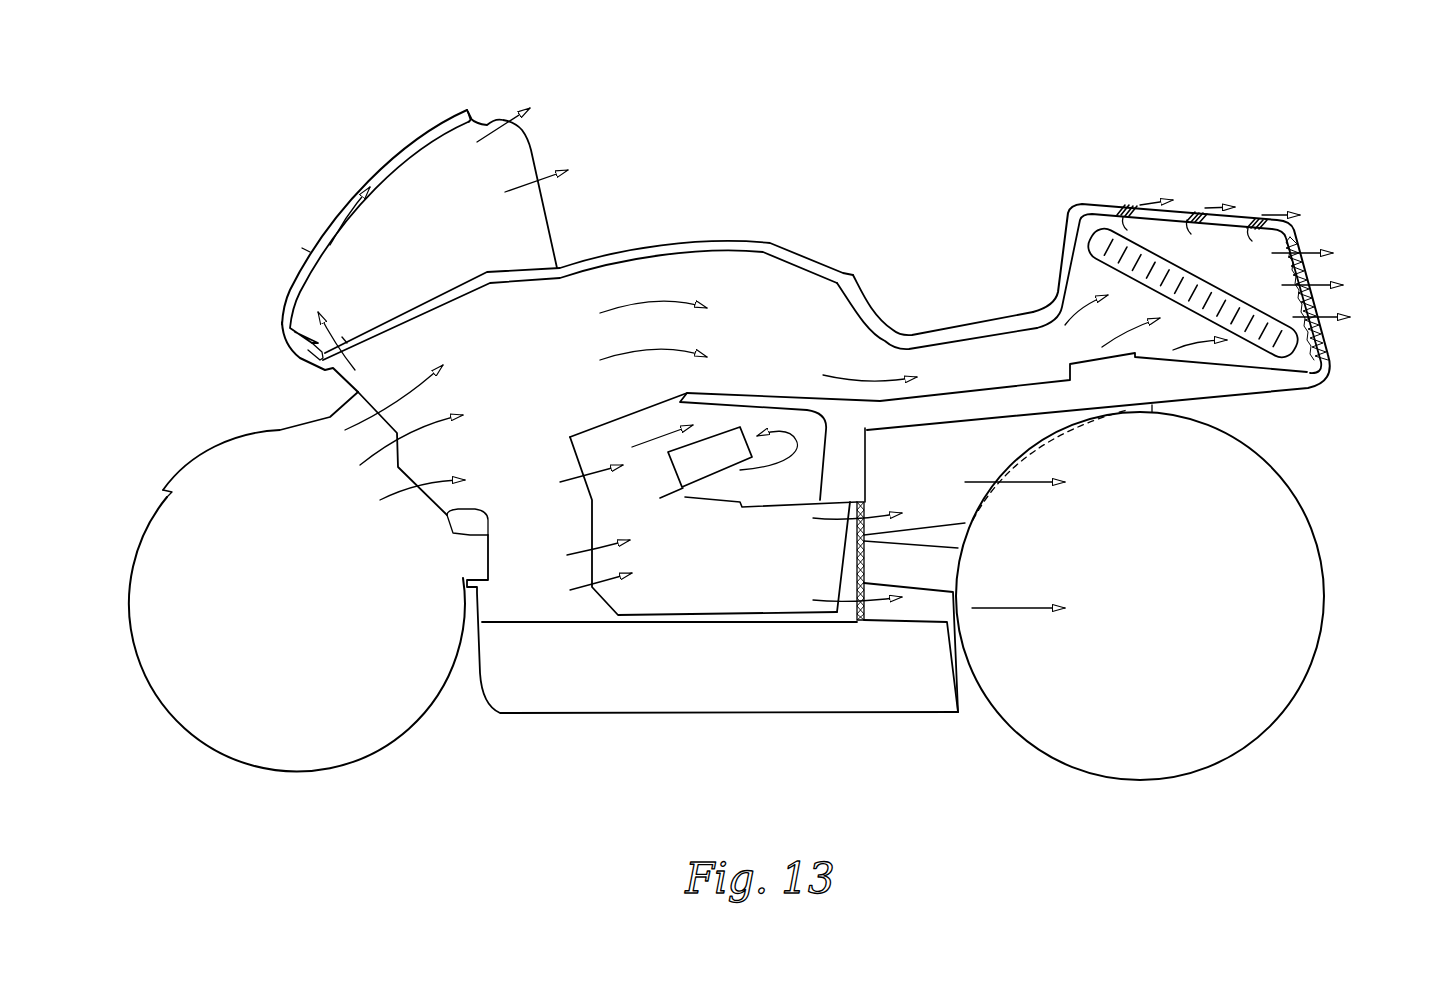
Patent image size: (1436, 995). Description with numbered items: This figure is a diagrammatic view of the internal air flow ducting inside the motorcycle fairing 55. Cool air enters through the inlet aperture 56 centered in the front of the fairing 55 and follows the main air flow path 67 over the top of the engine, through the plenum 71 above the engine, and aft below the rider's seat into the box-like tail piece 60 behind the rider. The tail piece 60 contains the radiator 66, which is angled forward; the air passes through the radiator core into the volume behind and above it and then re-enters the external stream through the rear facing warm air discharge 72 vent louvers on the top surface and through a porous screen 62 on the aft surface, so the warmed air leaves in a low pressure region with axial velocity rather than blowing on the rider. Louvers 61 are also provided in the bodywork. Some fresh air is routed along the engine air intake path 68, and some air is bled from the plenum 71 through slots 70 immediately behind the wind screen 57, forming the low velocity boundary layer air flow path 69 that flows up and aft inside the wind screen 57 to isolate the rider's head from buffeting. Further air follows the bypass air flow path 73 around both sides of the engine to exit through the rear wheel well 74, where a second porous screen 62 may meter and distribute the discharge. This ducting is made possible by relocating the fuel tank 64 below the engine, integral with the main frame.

The fairing 55 is at (287, 277).
The inlet aperture 56 is at (360, 399).
The wind screen 57 is at (327, 202).
The tail piece 60 is at (1087, 207).
The louvers 61 is at (1193, 217).
The porous screens 62 is at (1333, 345).
The fuel tank 64 is at (660, 676).
The radiator 66 is at (1115, 225).
The main air flow path 67 is at (860, 380).
The engine air intake path 68 is at (683, 490).
The wind screen boundary layer air flow path 69 is at (357, 203).
The slots 70 is at (287, 325).
The plenum 71 is at (663, 273).
The warm air discharge 72 is at (1265, 217).
The bypass air flow path 73 is at (830, 593).
The rear wheel well 74 is at (997, 430).